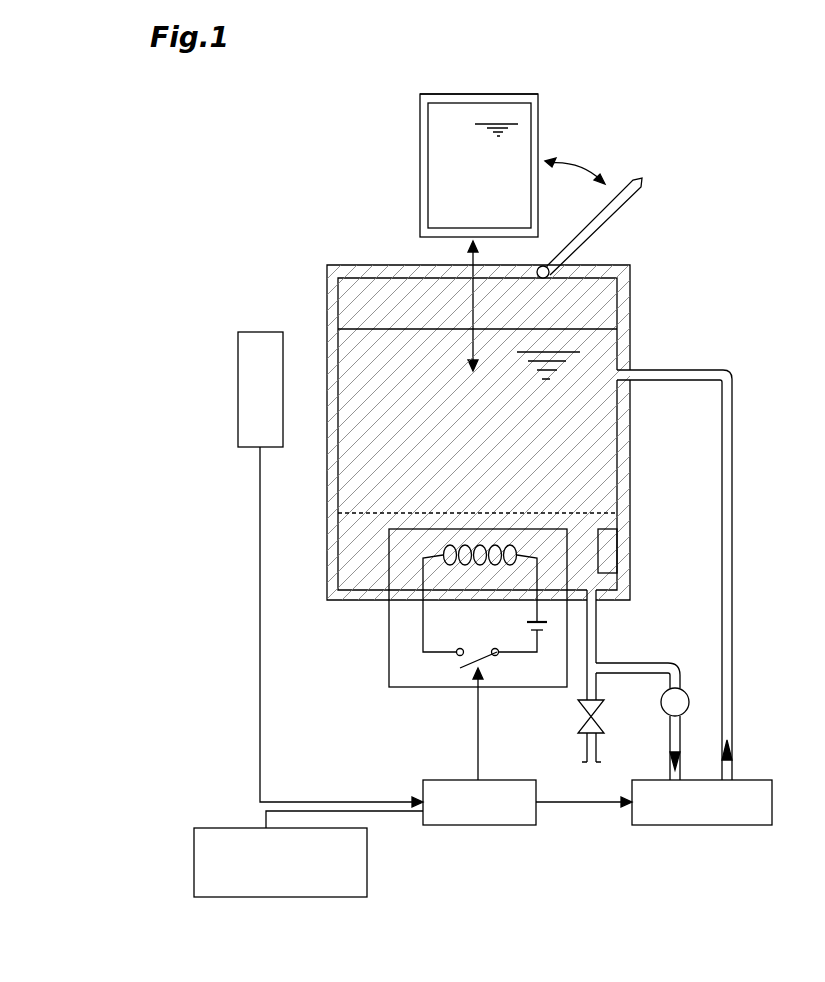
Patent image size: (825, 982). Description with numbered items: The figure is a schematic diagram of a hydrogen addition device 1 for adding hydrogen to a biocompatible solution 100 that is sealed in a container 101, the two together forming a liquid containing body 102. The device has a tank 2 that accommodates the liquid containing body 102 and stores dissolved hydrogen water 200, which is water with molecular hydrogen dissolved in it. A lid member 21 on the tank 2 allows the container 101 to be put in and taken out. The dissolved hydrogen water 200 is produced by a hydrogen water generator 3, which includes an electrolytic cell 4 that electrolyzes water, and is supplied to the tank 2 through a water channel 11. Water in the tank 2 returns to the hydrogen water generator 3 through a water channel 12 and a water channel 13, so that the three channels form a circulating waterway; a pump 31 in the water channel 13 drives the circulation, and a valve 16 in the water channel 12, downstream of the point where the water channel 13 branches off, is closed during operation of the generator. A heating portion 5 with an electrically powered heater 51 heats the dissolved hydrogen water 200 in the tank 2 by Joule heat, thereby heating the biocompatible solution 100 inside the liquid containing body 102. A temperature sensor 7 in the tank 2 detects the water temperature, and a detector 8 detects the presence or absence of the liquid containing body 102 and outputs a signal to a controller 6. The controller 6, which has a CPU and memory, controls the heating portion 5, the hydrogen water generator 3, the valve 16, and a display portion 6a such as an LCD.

The hydrogen addition device 1 is at (662, 102).
The biocompatible solution 100 is at (456, 155).
The container 101 is at (478, 94).
The liquid containing body 102 is at (538, 125).
The tank 2 is at (632, 305).
The dissolved hydrogen water 200 is at (575, 388).
The lid member 21 is at (608, 205).
The detector 8 is at (238, 385).
The heating portion 5 is at (422, 654).
The heater 51 is at (440, 552).
The temperature sensor 7 is at (608, 553).
The water channel 11 is at (734, 580).
The water channel 12 is at (600, 628).
The water channel 13 is at (634, 673).
The valve 16 is at (580, 717).
The pump 31 is at (684, 690).
The controller 6 is at (478, 826).
The display portion 6a is at (194, 860).
The hydrogen water generator 3 is at (678, 826).
The electrolytic cell 4 is at (714, 826).